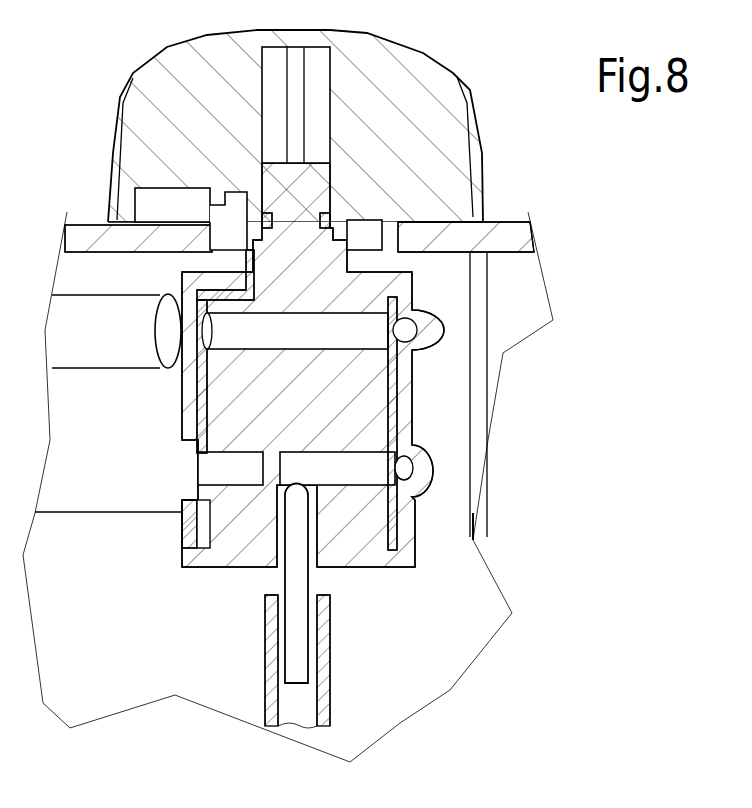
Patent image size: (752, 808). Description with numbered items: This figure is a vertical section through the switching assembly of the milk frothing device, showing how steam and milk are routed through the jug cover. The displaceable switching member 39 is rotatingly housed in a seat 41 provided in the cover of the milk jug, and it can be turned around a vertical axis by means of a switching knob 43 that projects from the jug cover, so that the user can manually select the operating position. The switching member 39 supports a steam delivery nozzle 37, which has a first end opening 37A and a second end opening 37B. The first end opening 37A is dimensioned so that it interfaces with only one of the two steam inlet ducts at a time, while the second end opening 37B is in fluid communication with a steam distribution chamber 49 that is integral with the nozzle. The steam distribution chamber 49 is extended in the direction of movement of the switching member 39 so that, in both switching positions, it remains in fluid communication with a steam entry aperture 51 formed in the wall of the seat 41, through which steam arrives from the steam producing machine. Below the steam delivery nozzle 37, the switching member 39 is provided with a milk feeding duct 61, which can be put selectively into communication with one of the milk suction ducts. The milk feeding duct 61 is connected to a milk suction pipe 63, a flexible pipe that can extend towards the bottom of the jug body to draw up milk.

The steam delivery nozzle 37 is at (297, 466).
The first end opening 37A is at (393, 330).
The second end opening 37B is at (207, 327).
The displaceable switching member 39 is at (245, 420).
The seat 41 is at (400, 420).
The switching knob 43 is at (148, 102).
The steam distribution chamber 49 is at (175, 318).
The steam entry aperture 51 is at (167, 370).
The milk feeding duct 61 is at (367, 477).
The milk suction pipe 63 is at (273, 645).